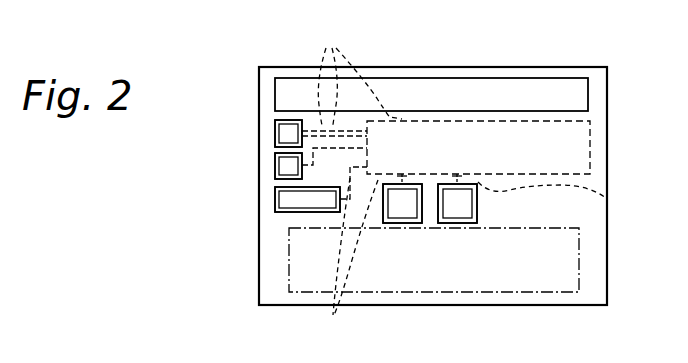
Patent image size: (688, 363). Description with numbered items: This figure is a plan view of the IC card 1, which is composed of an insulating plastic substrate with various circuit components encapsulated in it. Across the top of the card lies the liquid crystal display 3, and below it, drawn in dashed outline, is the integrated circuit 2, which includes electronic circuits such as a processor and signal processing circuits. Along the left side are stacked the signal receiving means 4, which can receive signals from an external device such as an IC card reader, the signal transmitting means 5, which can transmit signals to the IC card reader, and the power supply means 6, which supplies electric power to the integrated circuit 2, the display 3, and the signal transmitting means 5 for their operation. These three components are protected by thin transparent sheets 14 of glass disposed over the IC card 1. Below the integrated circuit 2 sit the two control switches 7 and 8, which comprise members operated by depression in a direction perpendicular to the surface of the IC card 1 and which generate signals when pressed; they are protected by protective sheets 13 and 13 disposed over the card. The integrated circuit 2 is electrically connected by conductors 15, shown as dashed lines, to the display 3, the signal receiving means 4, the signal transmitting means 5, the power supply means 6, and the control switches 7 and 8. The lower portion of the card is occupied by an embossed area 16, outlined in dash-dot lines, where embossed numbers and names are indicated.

The IC card 1 is at (608, 78).
The integrated circuit 2 is at (590, 140).
The liquid crystal display 3 is at (487, 76).
The signal receiving means 4 is at (285, 128).
The signal transmitting means 5 is at (288, 163).
The power supply means 6 is at (288, 199).
The control switch 7 is at (405, 212).
The control switch 8 is at (463, 215).
The protective sheet 13 is at (416, 224).
The thin transparent sheet of glass 14 is at (278, 131).
The conductors 15 is at (622, 200).
The embossed area 16 is at (566, 291).